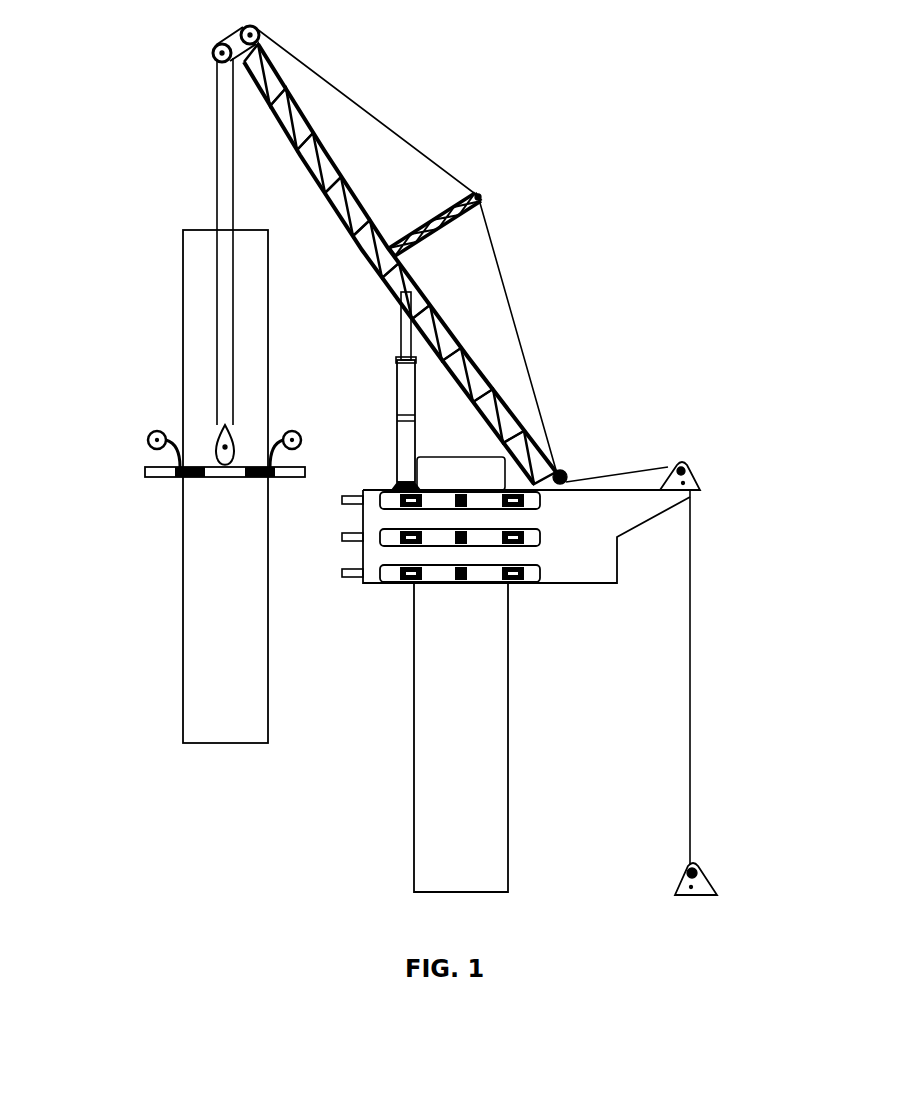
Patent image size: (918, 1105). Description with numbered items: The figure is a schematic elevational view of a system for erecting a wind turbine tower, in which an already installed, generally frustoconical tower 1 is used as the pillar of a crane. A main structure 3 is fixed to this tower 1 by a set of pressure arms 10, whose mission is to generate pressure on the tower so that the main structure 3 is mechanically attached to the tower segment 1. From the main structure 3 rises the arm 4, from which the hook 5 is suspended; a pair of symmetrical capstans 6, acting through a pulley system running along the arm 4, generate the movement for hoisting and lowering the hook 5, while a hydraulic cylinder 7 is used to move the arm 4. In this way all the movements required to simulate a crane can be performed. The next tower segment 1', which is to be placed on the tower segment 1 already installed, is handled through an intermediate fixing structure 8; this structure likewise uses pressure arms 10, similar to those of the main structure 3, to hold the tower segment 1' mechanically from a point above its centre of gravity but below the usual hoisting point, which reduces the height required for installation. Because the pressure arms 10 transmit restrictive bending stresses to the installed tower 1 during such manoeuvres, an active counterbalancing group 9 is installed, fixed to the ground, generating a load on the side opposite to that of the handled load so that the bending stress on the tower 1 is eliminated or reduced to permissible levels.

The tower 1 is at (381, 737).
The tower segment 1' is at (145, 486).
The main structure 3 is at (607, 572).
The arm 4 is at (493, 197).
The hook 5 is at (203, 438).
The capstan 6 is at (708, 475).
The hydraulic cylinder 7 is at (424, 391).
The intermediate fixing structure 8 is at (200, 479).
The active counterbalancing group 9 is at (722, 882).
The pressure arms 10 is at (475, 585).